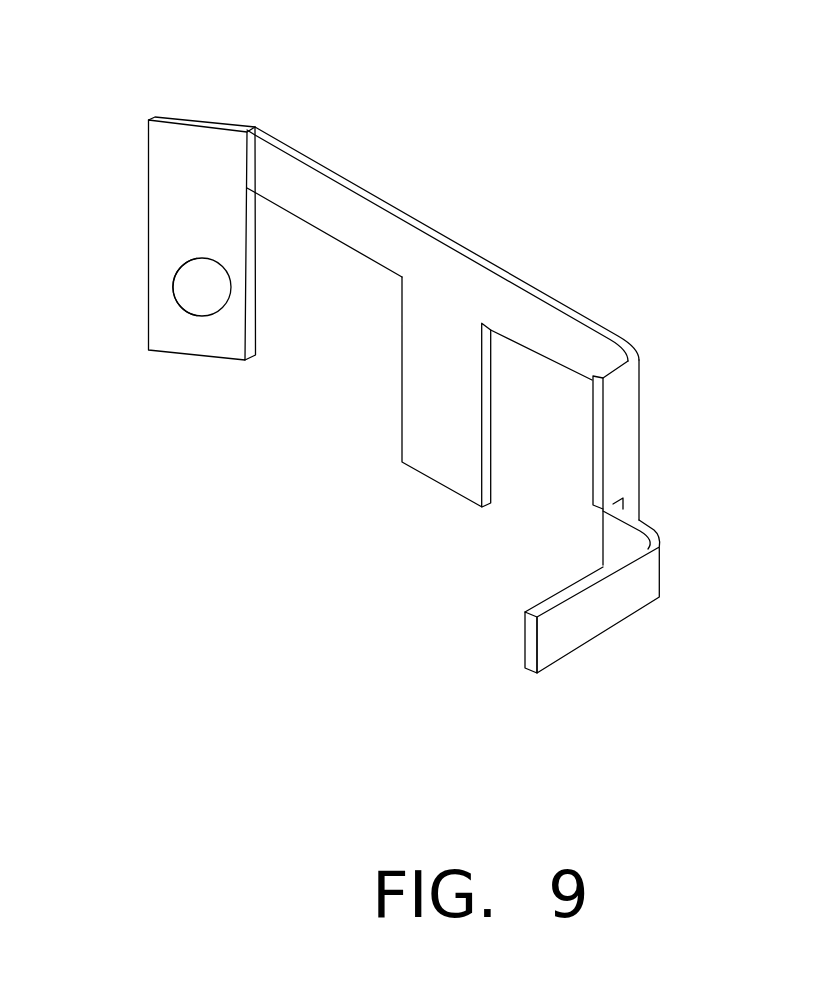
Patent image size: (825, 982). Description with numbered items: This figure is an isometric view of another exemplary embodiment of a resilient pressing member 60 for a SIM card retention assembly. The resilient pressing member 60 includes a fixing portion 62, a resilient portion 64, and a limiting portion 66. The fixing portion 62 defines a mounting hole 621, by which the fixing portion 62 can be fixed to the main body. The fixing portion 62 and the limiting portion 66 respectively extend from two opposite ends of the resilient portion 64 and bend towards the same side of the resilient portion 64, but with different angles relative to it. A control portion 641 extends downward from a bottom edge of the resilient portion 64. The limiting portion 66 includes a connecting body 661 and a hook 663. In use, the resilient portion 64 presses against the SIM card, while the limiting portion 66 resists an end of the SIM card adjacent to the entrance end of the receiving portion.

The resilient pressing member 60 is at (348, 36).
The fixing portion 62 is at (206, 198).
The mounting hole 621 is at (193, 283).
The resilient portion 64 is at (443, 322).
The control portion 641 is at (430, 408).
The limiting portion 66 is at (662, 445).
The connecting body 661 is at (630, 373).
The hook 663 is at (620, 592).